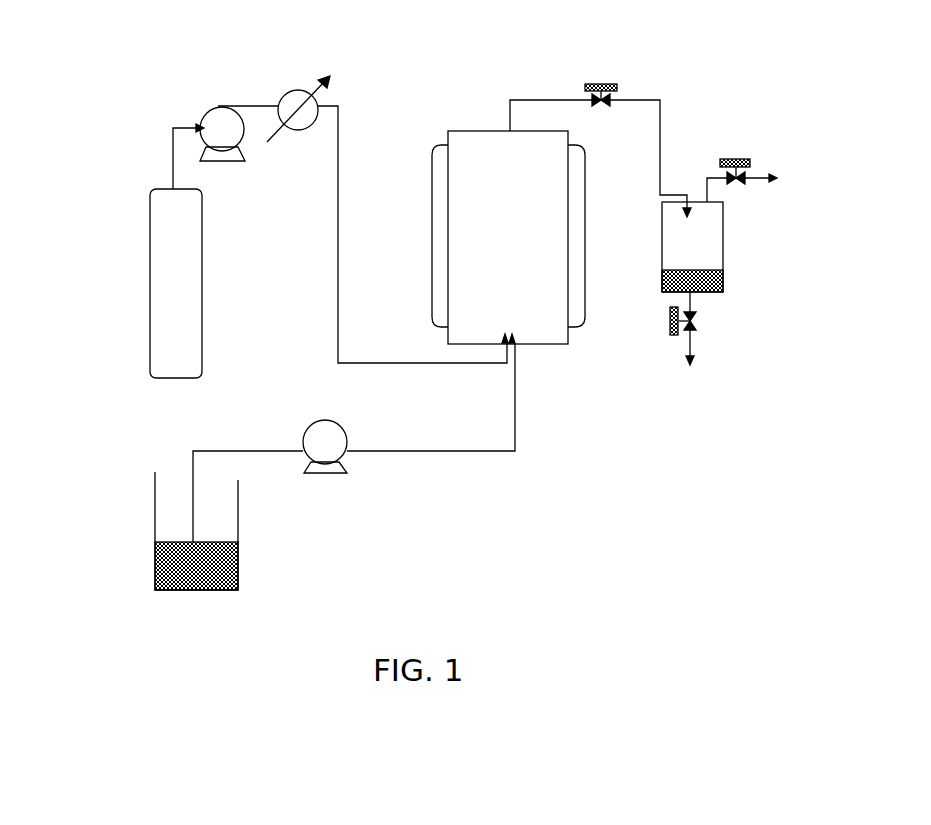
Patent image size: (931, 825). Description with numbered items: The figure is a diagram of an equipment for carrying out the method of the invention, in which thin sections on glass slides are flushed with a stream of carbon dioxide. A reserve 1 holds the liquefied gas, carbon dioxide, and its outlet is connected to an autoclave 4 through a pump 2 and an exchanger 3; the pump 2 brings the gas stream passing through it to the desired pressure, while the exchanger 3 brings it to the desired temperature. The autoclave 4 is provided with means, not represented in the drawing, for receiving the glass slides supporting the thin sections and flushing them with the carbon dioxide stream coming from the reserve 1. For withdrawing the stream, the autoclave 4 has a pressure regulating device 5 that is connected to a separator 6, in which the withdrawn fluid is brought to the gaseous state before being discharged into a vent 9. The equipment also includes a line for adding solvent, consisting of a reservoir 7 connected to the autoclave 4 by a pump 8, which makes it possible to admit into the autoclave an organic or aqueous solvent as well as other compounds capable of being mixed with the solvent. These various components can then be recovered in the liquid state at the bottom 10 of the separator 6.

The reserve 1 is at (170, 288).
The pump 2 is at (222, 130).
The exchanger 3 is at (292, 104).
The autoclave 4 is at (487, 158).
The pressure regulating device 5 is at (600, 75).
The separator 6 is at (702, 240).
The reservoir 7 is at (183, 570).
The pump 8 is at (340, 477).
The vent 9 is at (770, 170).
The bottom of the separator 10 is at (698, 352).